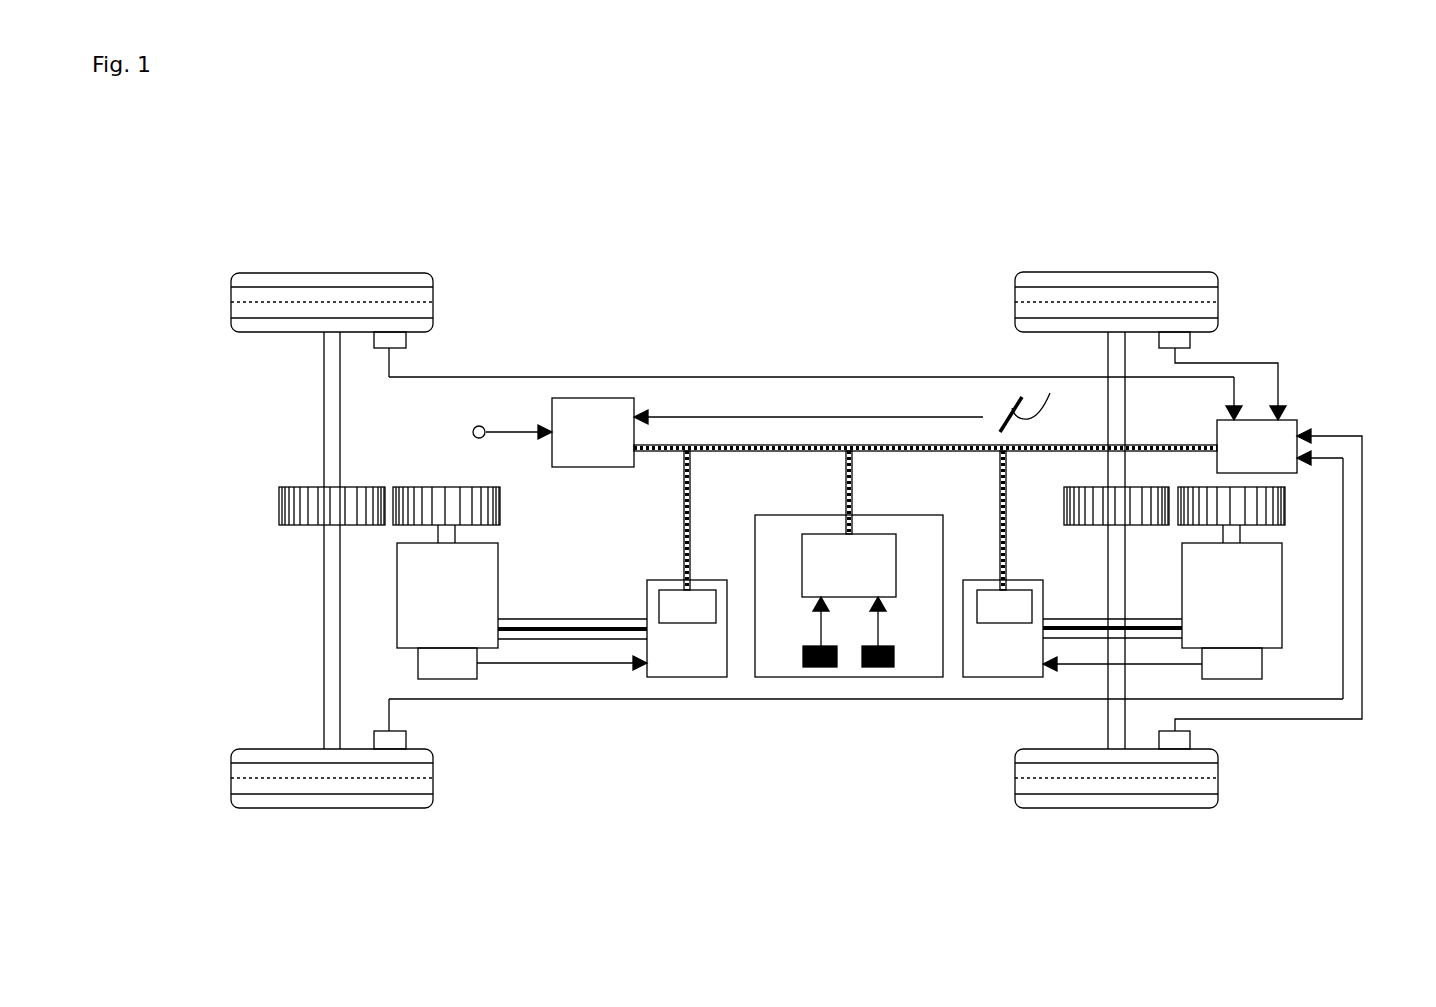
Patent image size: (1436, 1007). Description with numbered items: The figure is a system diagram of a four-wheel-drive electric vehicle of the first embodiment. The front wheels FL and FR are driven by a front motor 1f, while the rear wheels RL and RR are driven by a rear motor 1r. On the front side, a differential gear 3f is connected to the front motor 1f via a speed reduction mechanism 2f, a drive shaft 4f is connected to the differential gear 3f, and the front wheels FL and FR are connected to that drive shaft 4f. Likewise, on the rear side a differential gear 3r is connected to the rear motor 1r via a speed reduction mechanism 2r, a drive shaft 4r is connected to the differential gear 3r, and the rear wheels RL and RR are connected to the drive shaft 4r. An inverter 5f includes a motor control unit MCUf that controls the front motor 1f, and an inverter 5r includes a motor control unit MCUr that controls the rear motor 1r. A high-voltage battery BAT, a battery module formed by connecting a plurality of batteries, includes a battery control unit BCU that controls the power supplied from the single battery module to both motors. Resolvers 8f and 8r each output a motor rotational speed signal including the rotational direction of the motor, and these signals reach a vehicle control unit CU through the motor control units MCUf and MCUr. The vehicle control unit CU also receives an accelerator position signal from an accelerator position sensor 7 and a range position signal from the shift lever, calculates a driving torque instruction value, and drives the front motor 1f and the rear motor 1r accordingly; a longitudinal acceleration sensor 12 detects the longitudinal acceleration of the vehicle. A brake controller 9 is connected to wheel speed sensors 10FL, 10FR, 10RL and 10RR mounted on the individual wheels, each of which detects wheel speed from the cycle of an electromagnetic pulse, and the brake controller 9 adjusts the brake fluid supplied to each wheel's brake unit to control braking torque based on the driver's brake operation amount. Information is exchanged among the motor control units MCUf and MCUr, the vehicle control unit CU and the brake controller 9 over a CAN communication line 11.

The rear left wheel RL is at (277, 270).
The rear right wheel RR is at (270, 810).
The front left wheel FL is at (1082, 270).
The front right wheel FR is at (1072, 810).
The drive shaft 4r is at (322, 717).
The drive shaft 4f is at (1107, 722).
The differential gear 3r is at (279, 505).
The speed reduction mechanism 2r is at (500, 505).
The differential gear 3f is at (1130, 487).
The speed reduction mechanism 2f is at (1285, 497).
The rear motor 1r is at (498, 563).
The front motor 1f is at (1282, 575).
The resolver 8r is at (418, 665).
The resolver 8f is at (1262, 664).
The inverter 5r is at (672, 680).
The inverter 5f is at (1020, 580).
The motor control unit MCUr is at (662, 590).
The motor control unit MCUf is at (1005, 625).
The wheel speed sensor 10RL is at (406, 344).
The wheel speed sensor 10FL is at (1190, 345).
The wheel speed sensor 10RR is at (406, 742).
The wheel speed sensor 10FR is at (1190, 740).
The vehicle control unit CU is at (578, 398).
The longitudinal acceleration sensor 12 is at (472, 432).
The accelerator position sensor 7 is at (1003, 405).
The CAN communication line 11 is at (720, 445).
The high-voltage battery BAT is at (912, 503).
The battery control unit BCU is at (800, 534).
The brake controller 9 is at (1297, 420).